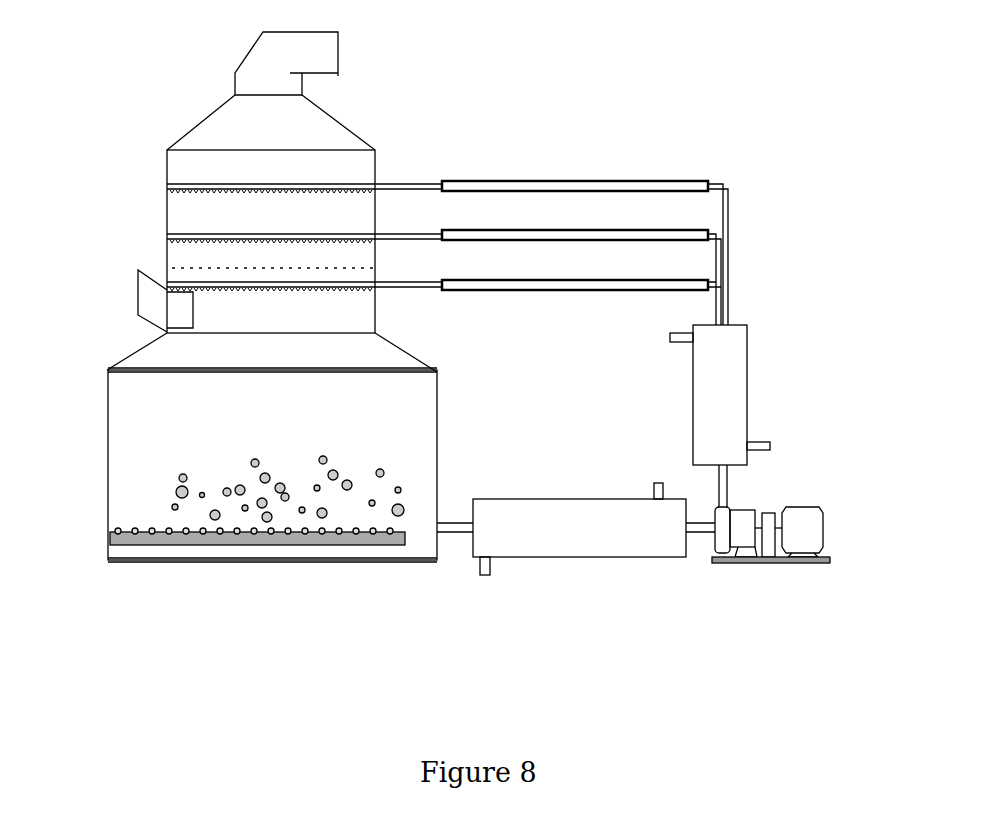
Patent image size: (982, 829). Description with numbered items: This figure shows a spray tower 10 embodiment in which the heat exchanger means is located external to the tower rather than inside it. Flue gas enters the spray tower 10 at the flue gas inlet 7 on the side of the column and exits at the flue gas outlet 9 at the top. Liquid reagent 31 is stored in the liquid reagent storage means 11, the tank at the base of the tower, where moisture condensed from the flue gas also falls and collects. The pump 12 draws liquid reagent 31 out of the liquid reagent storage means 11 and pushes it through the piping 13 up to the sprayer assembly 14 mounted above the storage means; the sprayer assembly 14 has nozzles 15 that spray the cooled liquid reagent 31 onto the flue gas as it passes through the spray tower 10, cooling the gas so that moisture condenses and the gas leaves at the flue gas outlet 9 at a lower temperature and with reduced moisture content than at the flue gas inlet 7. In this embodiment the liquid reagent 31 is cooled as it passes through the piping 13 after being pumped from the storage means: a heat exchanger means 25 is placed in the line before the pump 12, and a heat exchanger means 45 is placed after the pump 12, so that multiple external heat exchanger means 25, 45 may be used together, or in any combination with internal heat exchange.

The flue gas inlet 7 is at (130, 293).
The flue gas outlet 9 is at (350, 45).
The spray tower 10 is at (176, 82).
The liquid reagent storage means 11 is at (105, 450).
The pump 12 is at (832, 528).
The piping 13 is at (737, 308).
The sprayer assembly 14 is at (597, 178).
The nozzles 15 is at (202, 192).
The heat exchanger means 25 is at (578, 563).
The liquid reagent 31 is at (143, 500).
The heat exchanger means 45 is at (755, 397).